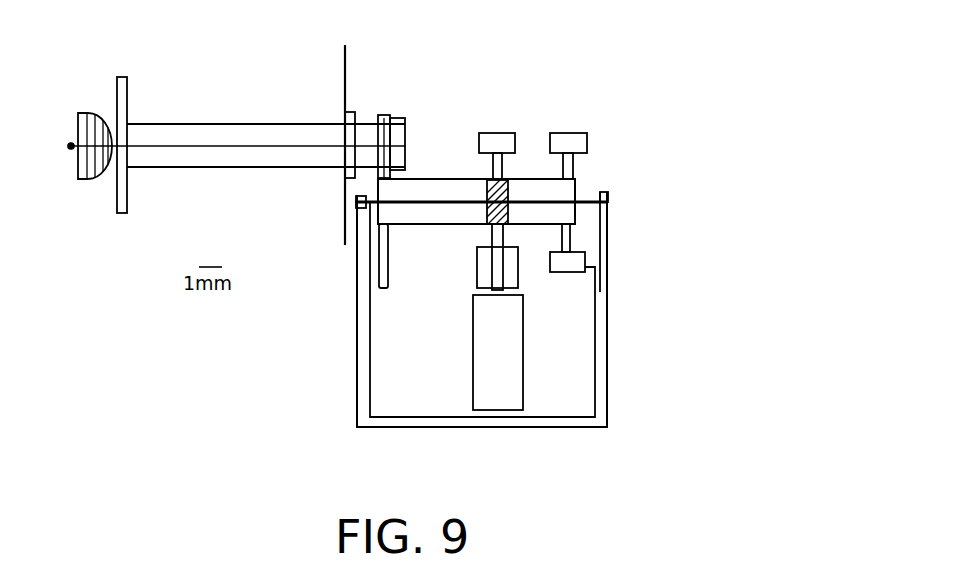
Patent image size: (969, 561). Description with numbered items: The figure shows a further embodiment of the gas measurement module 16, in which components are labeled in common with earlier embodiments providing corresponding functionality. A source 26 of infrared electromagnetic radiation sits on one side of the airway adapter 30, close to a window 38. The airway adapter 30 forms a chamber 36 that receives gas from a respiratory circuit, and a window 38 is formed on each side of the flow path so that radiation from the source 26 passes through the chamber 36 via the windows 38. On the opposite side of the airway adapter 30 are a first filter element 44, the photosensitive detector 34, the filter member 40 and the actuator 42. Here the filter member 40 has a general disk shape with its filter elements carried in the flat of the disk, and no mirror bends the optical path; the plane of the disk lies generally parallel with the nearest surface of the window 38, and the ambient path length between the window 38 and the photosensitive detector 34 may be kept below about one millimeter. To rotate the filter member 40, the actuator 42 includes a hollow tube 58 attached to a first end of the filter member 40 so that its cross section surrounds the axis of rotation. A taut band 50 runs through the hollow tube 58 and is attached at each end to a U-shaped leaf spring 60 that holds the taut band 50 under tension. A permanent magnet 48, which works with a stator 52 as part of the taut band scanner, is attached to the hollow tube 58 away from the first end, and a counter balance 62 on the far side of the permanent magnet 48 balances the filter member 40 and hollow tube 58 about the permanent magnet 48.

The gas measurement module 16 is at (174, 402).
The source 26 is at (68, 198).
The airway adapter 30 is at (265, 297).
The photosensitive detector 34 is at (400, 125).
The chamber 36 is at (237, 200).
The window 38 is at (121, 77).
The filter member 40 is at (378, 271).
The actuator 42 is at (532, 128).
The first filter element 44 is at (380, 133).
The permanent magnet 48 is at (519, 286).
The taut band 50 is at (448, 200).
The stator 52 is at (487, 350).
The hollow tube 58 is at (422, 228).
The leaf spring 60 is at (427, 428).
The counter balance 62 is at (570, 136).